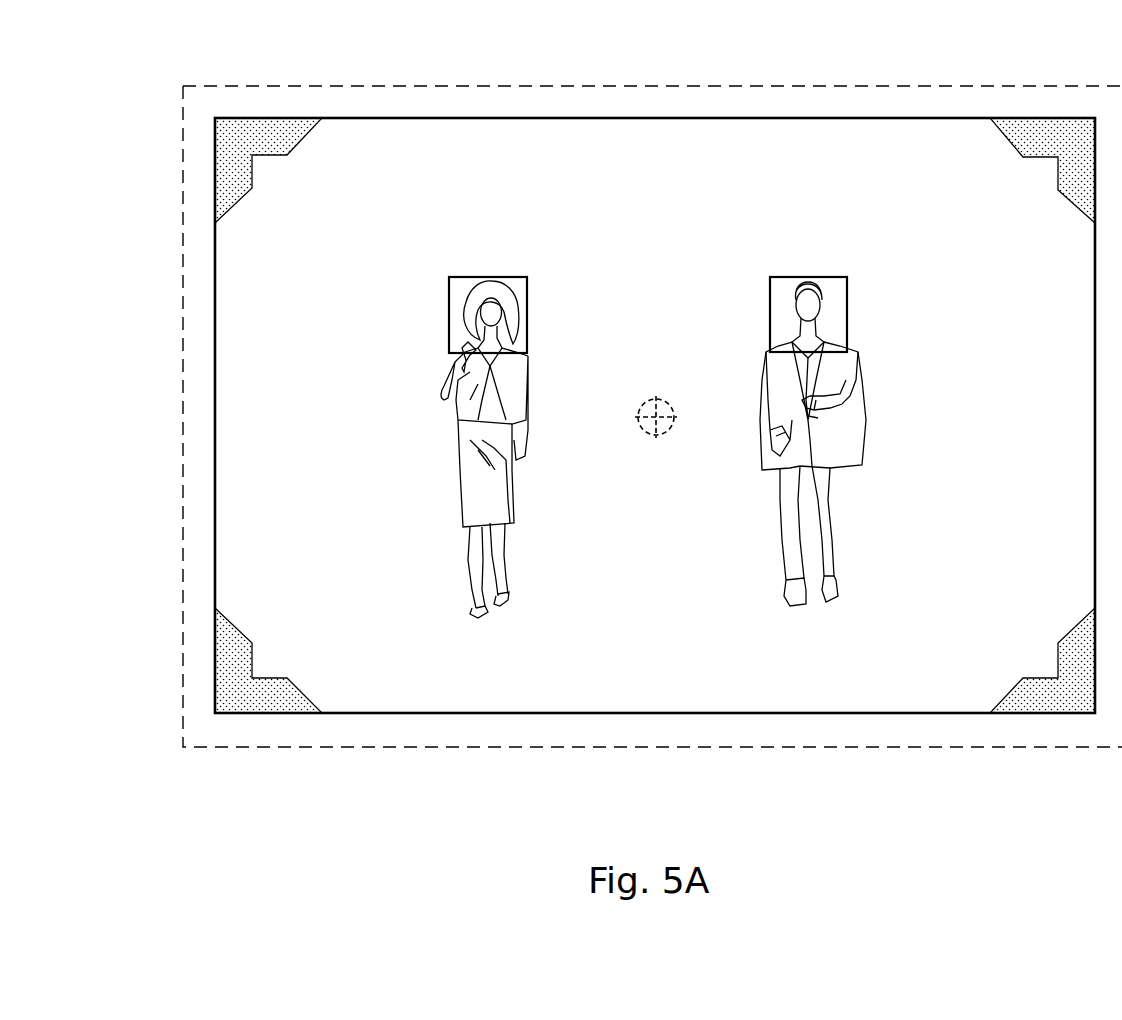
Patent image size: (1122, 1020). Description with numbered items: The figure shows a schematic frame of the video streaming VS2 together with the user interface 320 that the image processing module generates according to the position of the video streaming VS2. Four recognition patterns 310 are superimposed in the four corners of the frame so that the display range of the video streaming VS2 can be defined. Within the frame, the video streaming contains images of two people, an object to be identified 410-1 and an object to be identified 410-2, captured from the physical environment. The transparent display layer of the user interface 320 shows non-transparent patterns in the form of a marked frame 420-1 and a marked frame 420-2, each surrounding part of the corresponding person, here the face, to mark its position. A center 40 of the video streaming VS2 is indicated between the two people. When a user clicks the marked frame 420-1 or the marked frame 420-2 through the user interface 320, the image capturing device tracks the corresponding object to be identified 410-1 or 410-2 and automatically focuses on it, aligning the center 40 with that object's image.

The user interface 320 is at (455, 86).
The video streaming VS2 is at (387, 118).
The recognition patterns 310 is at (230, 175).
The object to be identified 410-1 is at (443, 367).
The marked frame 420-1 is at (448, 292).
The object to be identified 410-2 is at (843, 368).
The marked frame 420-2 is at (848, 292).
The center 40 is at (644, 398).